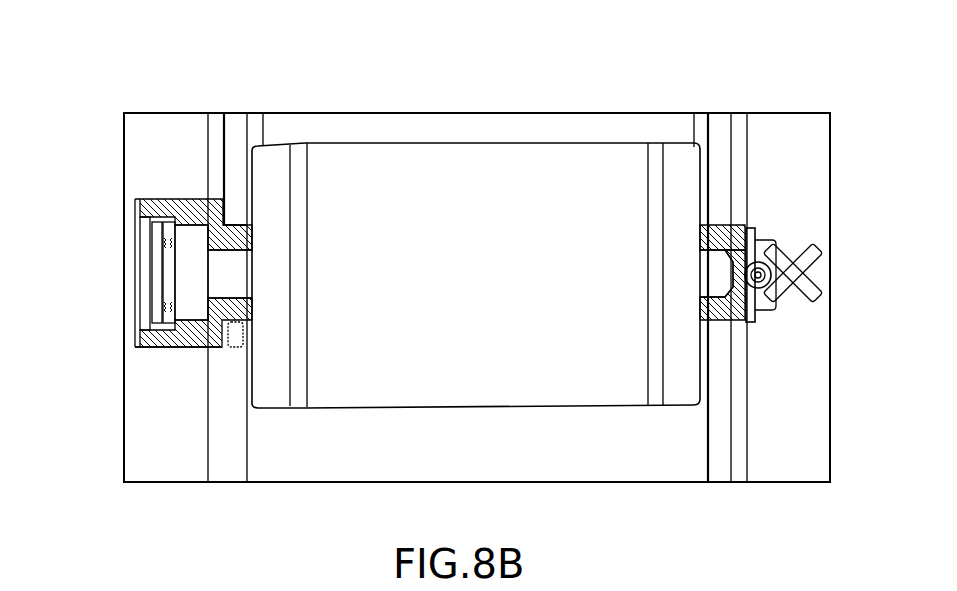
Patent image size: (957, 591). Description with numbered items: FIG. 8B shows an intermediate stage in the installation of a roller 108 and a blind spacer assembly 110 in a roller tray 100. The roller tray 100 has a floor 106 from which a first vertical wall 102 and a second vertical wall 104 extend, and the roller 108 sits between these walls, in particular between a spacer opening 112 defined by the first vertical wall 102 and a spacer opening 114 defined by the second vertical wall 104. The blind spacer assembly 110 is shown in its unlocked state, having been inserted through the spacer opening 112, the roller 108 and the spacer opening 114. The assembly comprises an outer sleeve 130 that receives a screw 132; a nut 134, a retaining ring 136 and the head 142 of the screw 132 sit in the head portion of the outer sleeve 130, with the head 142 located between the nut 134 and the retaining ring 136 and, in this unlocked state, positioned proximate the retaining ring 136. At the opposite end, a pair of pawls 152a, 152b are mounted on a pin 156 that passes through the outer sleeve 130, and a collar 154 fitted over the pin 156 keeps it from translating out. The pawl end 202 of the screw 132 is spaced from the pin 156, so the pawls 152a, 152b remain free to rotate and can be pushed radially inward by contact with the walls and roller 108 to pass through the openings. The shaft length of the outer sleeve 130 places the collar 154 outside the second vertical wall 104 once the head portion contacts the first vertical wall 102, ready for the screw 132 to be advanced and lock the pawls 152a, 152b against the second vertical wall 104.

The roller tray 100 is at (614, 108).
The first vertical wall 102 is at (241, 138).
The second vertical wall 104 is at (716, 132).
The floor 106 is at (480, 452).
The roller 108 is at (480, 287).
The blind spacer assembly 110 is at (143, 357).
The spacer opening 112 is at (236, 327).
The spacer opening 114 is at (739, 329).
The outer sleeve 130 is at (153, 202).
The screw 132 is at (233, 272).
The nut 134 is at (187, 243).
The retaining ring 136 is at (150, 305).
The head 142 is at (153, 245).
The pawl 152a is at (795, 252).
The pawl 152b is at (803, 302).
The collar 154 is at (757, 228).
The pin 156 is at (772, 275).
The pawl end 202 is at (740, 250).